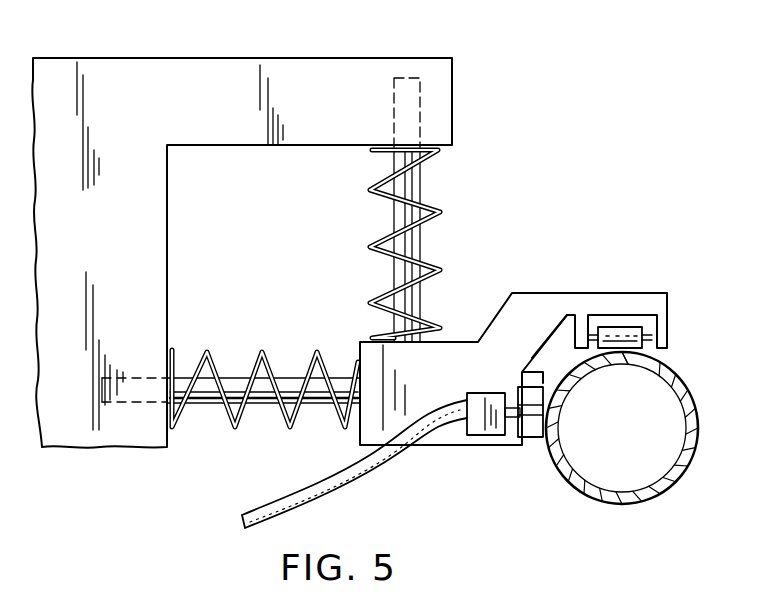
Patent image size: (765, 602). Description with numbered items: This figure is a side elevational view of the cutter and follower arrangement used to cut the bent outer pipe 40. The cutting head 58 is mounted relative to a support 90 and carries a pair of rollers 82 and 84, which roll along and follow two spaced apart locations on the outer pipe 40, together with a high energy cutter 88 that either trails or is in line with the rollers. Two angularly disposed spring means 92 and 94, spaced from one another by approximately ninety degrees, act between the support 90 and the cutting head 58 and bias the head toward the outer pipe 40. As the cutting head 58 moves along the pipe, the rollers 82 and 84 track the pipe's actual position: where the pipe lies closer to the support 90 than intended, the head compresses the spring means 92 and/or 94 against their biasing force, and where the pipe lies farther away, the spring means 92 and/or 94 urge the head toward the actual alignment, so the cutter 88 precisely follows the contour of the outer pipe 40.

The support 90 is at (205, 68).
The spring means 94 is at (440, 205).
The spring means 92 is at (233, 428).
The cutting head 58 is at (520, 293).
The high energy cutter 88 is at (533, 358).
The roller 84 is at (623, 328).
The roller 82 is at (533, 434).
The outer pipe 40 is at (682, 468).